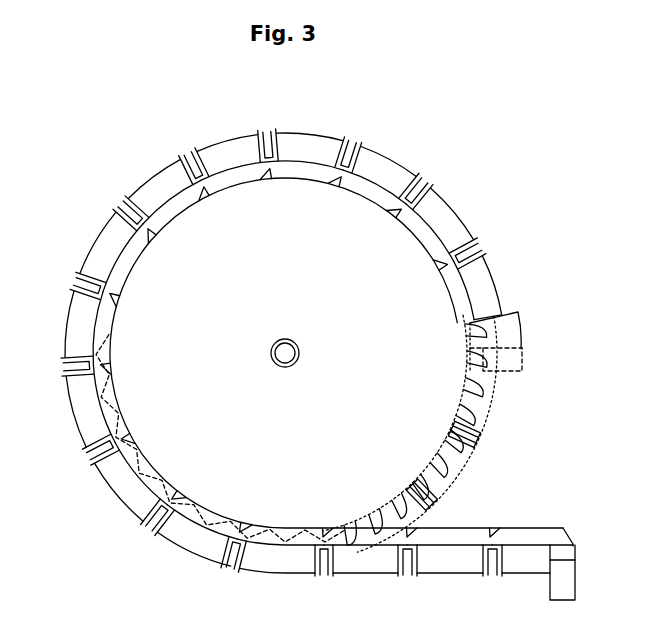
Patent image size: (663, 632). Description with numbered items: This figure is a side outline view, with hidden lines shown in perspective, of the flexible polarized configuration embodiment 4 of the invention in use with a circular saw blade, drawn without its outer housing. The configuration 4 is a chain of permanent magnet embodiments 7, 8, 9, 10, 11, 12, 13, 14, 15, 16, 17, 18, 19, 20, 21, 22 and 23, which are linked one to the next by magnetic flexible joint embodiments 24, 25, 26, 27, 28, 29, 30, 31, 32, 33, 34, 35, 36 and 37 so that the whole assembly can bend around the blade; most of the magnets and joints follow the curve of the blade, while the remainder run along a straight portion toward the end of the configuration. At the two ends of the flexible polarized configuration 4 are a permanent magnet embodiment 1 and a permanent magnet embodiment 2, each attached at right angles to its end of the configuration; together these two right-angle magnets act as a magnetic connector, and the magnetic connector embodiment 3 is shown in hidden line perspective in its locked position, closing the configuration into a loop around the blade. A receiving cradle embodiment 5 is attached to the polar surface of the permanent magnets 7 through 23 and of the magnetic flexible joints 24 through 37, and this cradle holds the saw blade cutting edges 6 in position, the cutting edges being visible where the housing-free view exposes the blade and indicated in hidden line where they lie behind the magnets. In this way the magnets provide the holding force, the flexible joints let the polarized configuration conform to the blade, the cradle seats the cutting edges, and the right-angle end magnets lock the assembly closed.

The permanent magnet embodiment 1 is at (512, 328).
The permanent magnet embodiment 2 is at (565, 583).
The magnetic connector embodiment in locked position 3 is at (512, 358).
The flexible polarized configuration embodiment 4 is at (565, 544).
The receiving cradle embodiment 5 is at (323, 540).
The saw blade cutting edges 6 is at (392, 491).
The permanent magnet embodiment 7 is at (480, 337).
The permanent magnet embodiment 8 is at (487, 279).
The permanent magnet embodiment 9 is at (447, 214).
The permanent magnet embodiment 10 is at (388, 165).
The permanent magnet embodiment 11 is at (304, 140).
The permanent magnet embodiment 12 is at (223, 148).
The permanent magnet embodiment 13 is at (152, 183).
The permanent magnet embodiment 14 is at (95, 248).
The permanent magnet embodiment 15 is at (75, 321).
The permanent magnet embodiment 16 is at (83, 409).
The permanent magnet embodiment 17 is at (122, 489).
The permanent magnet embodiment 18 is at (190, 543).
The permanent magnet embodiment 19 is at (275, 568).
The permanent magnet embodiment 20 is at (365, 568).
The permanent magnet embodiment 21 is at (448, 568).
The permanent magnet embodiment 22 is at (528, 568).
The permanent magnet embodiment 23 is at (568, 553).
The magnetic flexible joint embodiment 24 is at (470, 256).
The magnetic flexible joint embodiment 25 is at (415, 181).
The magnetic flexible joint embodiment 26 is at (344, 141).
The magnetic flexible joint embodiment 27 is at (258, 132).
The magnetic flexible joint embodiment 28 is at (185, 158).
The magnetic flexible joint embodiment 29 is at (123, 213).
The magnetic flexible joint embodiment 30 is at (82, 290).
The magnetic flexible joint embodiment 31 is at (68, 369).
The magnetic flexible joint embodiment 32 is at (97, 456).
The magnetic flexible joint embodiment 33 is at (162, 524).
The magnetic flexible joint embodiment 34 is at (233, 566).
The magnetic flexible joint embodiment 35 is at (328, 577).
The magnetic flexible joint embodiment 36 is at (413, 577).
The magnetic flexible joint embodiment 37 is at (498, 577).